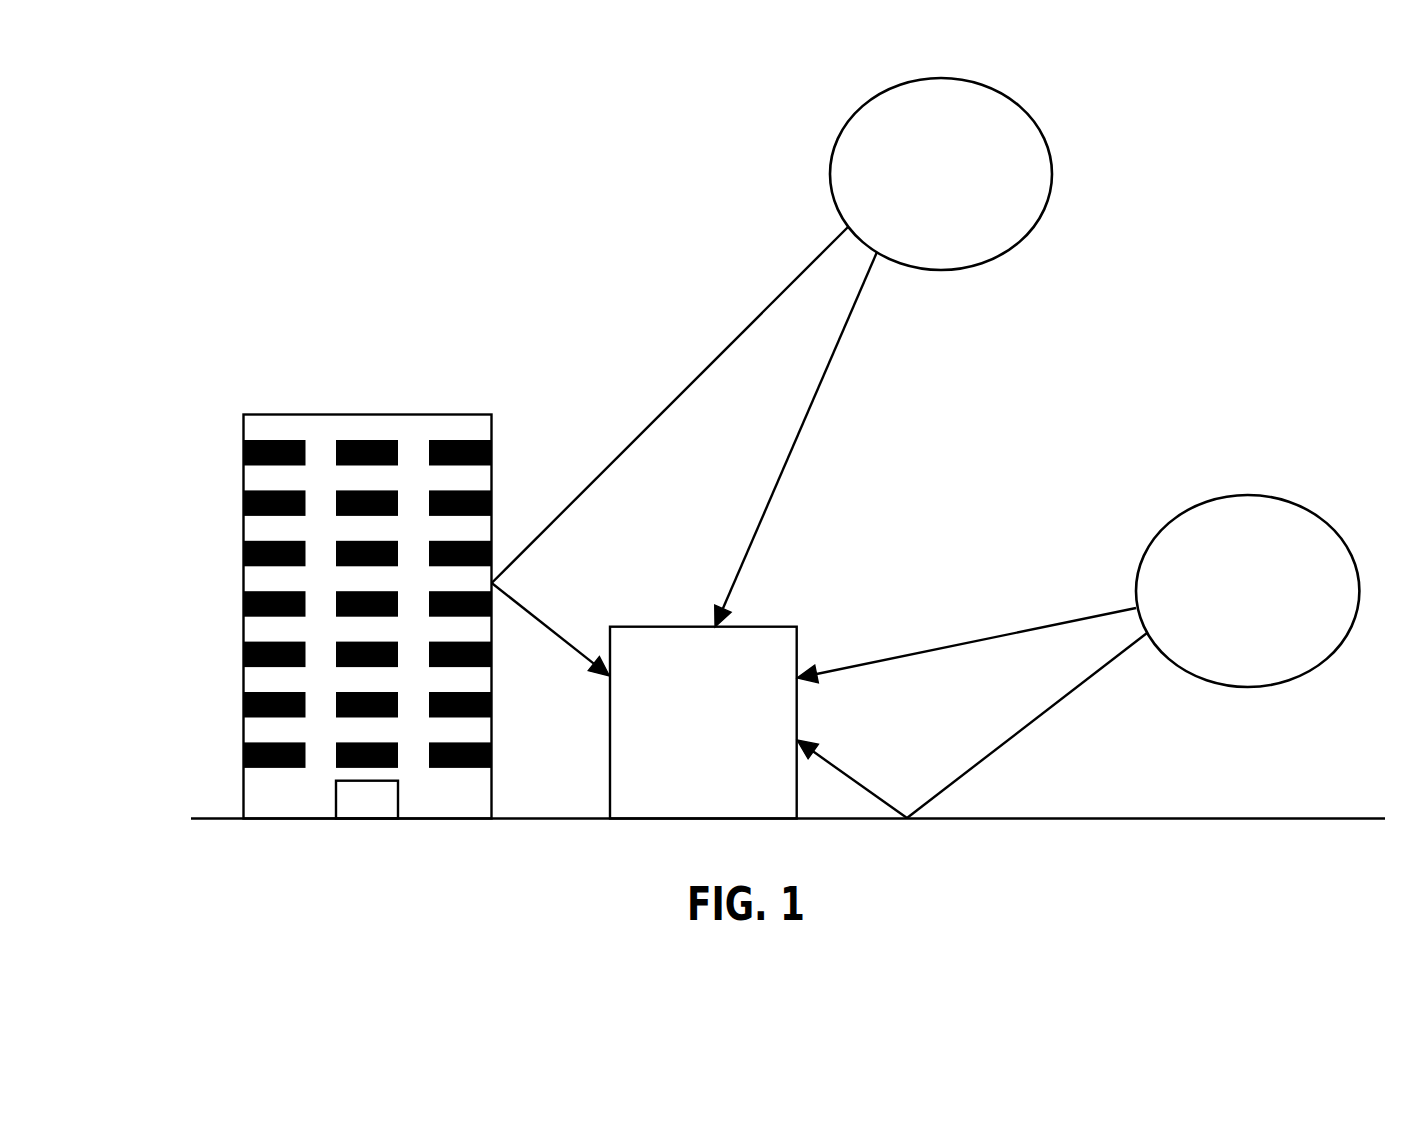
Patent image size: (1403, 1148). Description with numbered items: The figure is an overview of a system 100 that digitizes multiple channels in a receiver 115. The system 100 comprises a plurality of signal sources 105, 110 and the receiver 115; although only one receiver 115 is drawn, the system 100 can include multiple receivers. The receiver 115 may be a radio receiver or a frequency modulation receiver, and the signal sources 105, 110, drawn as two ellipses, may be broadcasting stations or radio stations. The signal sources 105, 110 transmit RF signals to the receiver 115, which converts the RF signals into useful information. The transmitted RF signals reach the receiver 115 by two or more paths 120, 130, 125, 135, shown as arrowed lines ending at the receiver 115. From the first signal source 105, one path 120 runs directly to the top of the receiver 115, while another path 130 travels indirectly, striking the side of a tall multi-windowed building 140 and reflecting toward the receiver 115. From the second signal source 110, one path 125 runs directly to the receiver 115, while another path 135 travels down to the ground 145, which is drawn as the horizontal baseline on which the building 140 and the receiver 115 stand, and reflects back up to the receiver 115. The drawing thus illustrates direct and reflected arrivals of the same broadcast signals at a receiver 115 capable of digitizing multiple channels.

The system 100 is at (240, 195).
The signal source 105 is at (959, 200).
The signal source 110 is at (1266, 616).
The receiver 115 is at (770, 738).
The path 120 is at (803, 420).
The path 125 is at (977, 637).
The path 130 is at (635, 442).
The path 135 is at (1012, 737).
The building 140 is at (376, 414).
The ground 145 is at (1316, 817).